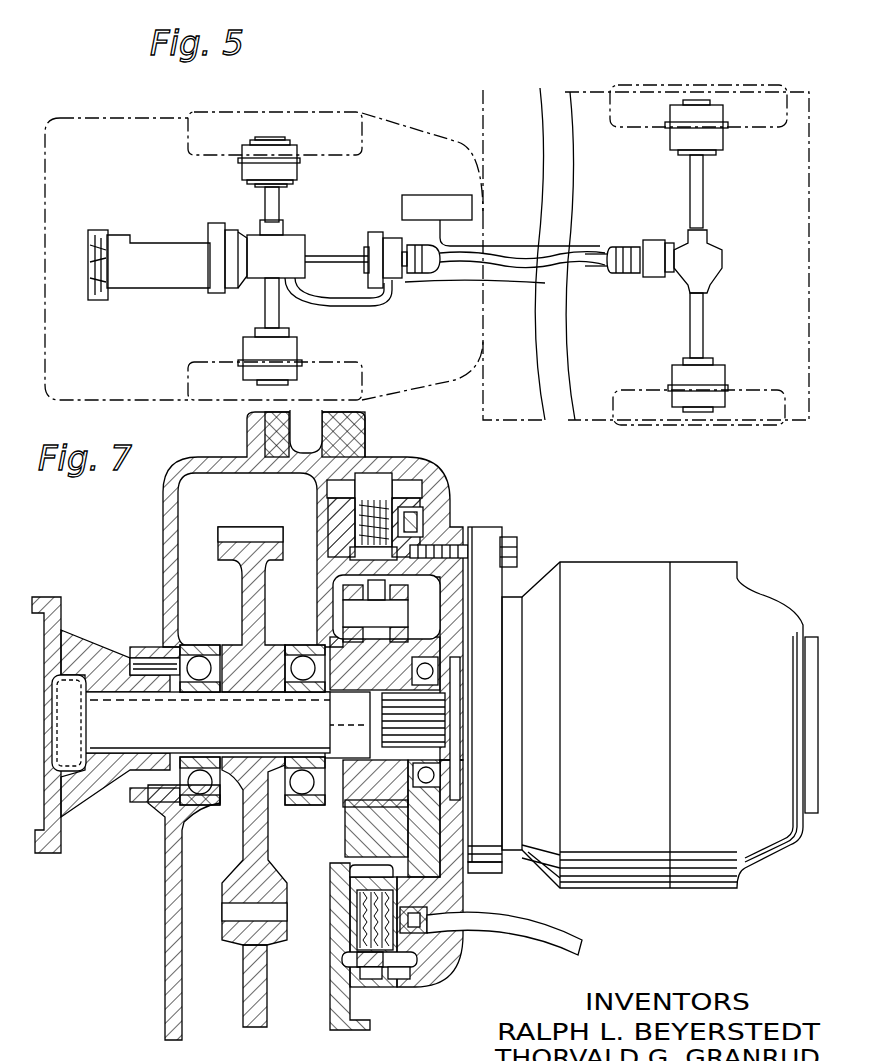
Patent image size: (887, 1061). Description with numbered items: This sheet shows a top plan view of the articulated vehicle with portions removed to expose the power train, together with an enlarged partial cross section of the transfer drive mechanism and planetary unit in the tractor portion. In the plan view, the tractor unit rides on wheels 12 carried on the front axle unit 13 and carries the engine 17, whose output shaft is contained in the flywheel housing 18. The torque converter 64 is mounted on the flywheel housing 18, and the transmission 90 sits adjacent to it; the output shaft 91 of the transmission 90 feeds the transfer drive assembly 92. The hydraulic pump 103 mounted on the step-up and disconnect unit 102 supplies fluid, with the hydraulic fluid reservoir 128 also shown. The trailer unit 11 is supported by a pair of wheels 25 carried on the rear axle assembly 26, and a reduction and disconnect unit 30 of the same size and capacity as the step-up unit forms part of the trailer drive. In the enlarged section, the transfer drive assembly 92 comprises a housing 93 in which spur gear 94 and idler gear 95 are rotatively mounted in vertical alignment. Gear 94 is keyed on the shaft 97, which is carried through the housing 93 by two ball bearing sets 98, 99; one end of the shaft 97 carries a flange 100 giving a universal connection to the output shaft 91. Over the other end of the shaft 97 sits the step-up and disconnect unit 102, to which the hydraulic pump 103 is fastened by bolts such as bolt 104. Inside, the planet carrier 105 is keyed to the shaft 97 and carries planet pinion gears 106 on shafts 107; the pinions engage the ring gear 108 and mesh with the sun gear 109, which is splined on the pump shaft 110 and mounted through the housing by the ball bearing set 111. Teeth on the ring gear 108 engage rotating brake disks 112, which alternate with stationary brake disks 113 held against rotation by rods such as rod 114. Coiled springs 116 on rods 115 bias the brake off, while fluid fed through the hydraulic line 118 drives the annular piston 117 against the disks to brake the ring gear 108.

In FIG. 5, the trailer unit 11 is at (602, 424).
In FIG. 5, the wheels 12 is at (208, 116).
In FIG. 5, the front axle unit 13 is at (263, 303).
In FIG. 5, the engine 17 is at (167, 268).
In FIG. 5, the flywheel housing 18 is at (212, 223).
In FIG. 5, the torque converter 64 is at (245, 230).
In FIG. 5, the transmission 90 is at (288, 266).
In FIG. 5, the output shaft 91 is at (330, 256).
In FIG. 5, the transfer drive assembly 92 is at (377, 228).
In FIG. 7, the transfer drive assembly 92 is at (162, 519).
In FIG. 7, the housing 93 is at (163, 568).
In FIG. 7, the spur gear 94 is at (240, 625).
In FIG. 7, the idler gear 95 is at (272, 1003).
In FIG. 7, the shaft 97 is at (242, 734).
In FIG. 7, the ball bearing set 98 is at (202, 694).
In FIG. 7, the ball bearing set 99 is at (308, 694).
In FIG. 7, the flange 100 is at (97, 640).
In FIG. 5, the step-up and disconnect unit 102 is at (393, 236).
In FIG. 7, the step-up and disconnect unit 102 is at (448, 478).
In FIG. 5, the hydraulic pump 103 is at (428, 276).
In FIG. 7, the hydraulic pump 103 is at (636, 814).
In FIG. 7, the bolt 104 is at (507, 537).
In FIG. 7, the planet carrier 105 is at (345, 690).
In FIG. 7, the planet pinion gears 106 is at (386, 608).
In FIG. 7, the shafts 107 is at (395, 608).
In FIG. 7, the ring gear 108 is at (341, 565).
In FIG. 7, the sun gear 109 is at (438, 692).
In FIG. 7, the shaft 110 is at (420, 723).
In FIG. 7, the ball bearing set 111 is at (447, 648).
In FIG. 7, the rotating brake disks 112 is at (360, 926).
In FIG. 7, the stationary brake disks 113 is at (368, 967).
In FIG. 7, the rod 114 is at (378, 490).
In FIG. 7, the rods 115 is at (403, 968).
In FIG. 7, the coiled springs 116 is at (357, 975).
In FIG. 7, the annular piston 117 is at (415, 522).
In FIG. 7, the hydraulic line 118 is at (488, 943).
In FIG. 5, the hydraulic fluid reservoir 128 is at (432, 213).
In FIG. 5, the wheels 25 is at (655, 83).
In FIG. 5, the rear axle assembly 26 is at (709, 211).
In FIG. 5, the reduction and disconnect unit 30 is at (652, 238).